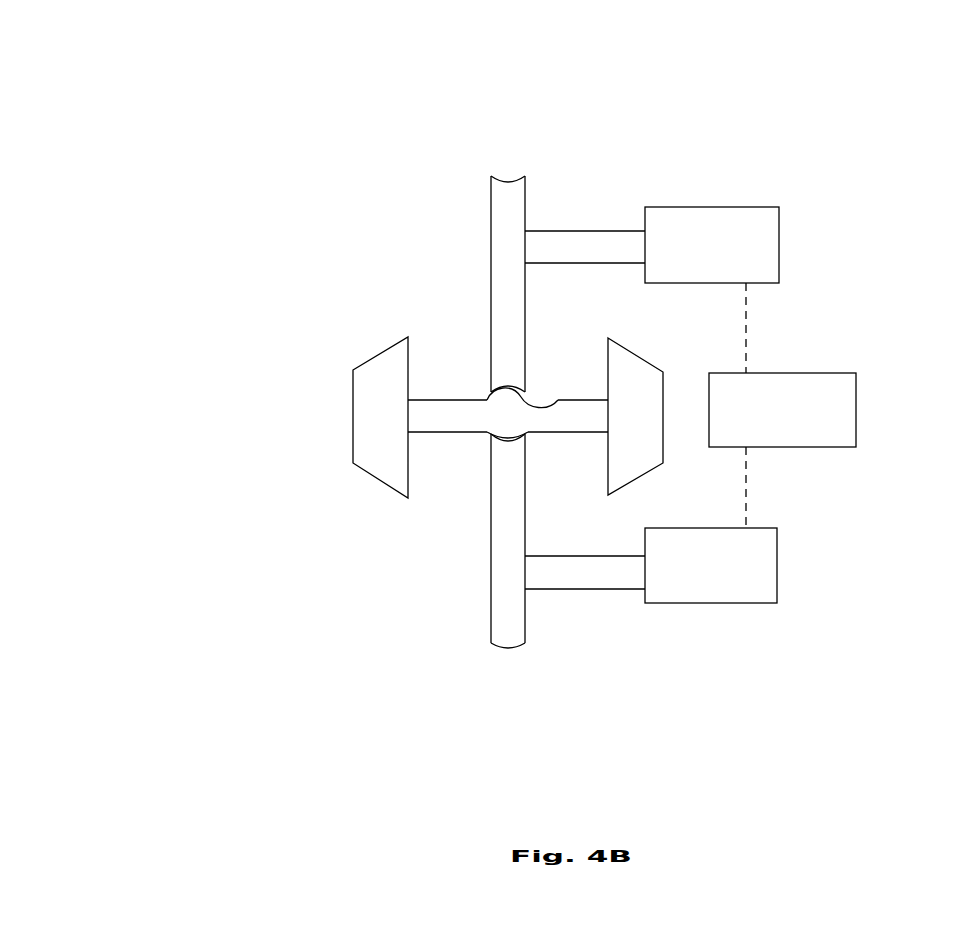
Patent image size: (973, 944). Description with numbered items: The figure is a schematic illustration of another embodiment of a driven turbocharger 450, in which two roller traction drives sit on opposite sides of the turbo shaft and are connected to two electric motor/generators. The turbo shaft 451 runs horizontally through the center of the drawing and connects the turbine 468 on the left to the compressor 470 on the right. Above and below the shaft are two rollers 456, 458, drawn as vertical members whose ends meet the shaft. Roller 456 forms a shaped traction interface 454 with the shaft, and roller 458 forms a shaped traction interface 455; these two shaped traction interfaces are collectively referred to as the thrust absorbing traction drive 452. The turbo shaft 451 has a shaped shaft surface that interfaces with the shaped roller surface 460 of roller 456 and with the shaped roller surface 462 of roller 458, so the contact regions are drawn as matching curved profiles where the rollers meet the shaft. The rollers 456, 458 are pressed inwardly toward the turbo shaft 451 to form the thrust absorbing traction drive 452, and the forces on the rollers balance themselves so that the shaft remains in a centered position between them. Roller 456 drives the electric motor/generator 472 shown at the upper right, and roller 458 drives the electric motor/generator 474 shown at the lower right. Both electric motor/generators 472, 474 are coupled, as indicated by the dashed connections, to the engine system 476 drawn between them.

The driven turbocharger 450 is at (203, 130).
The turbo shaft 451 is at (484, 393).
The thrust absorbing traction drive 452 is at (455, 400).
The shaped traction interface 454 is at (553, 402).
The shaped traction interface 455 is at (508, 447).
The roller 456 is at (490, 197).
The roller 458 is at (498, 610).
The shaped roller surface 460 is at (512, 181).
The shaped roller surface 462 is at (510, 643).
The turbine 468 is at (353, 412).
The compressor 470 is at (636, 353).
The electric motor/generator 472 is at (780, 233).
The electric motor/generator 474 is at (750, 587).
The engine system 476 is at (852, 383).